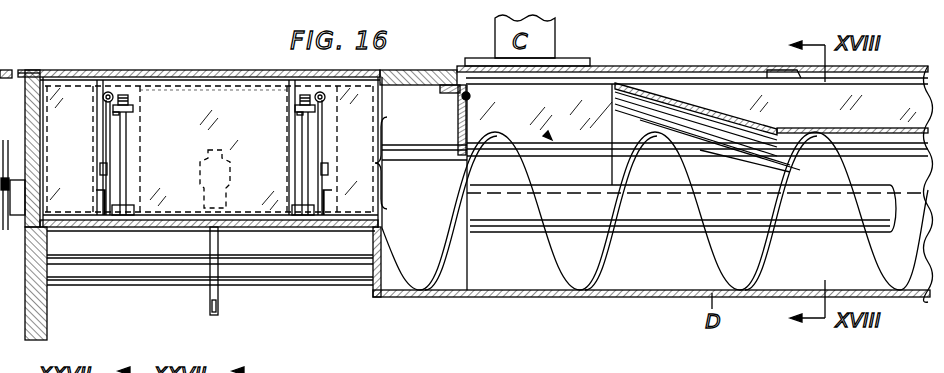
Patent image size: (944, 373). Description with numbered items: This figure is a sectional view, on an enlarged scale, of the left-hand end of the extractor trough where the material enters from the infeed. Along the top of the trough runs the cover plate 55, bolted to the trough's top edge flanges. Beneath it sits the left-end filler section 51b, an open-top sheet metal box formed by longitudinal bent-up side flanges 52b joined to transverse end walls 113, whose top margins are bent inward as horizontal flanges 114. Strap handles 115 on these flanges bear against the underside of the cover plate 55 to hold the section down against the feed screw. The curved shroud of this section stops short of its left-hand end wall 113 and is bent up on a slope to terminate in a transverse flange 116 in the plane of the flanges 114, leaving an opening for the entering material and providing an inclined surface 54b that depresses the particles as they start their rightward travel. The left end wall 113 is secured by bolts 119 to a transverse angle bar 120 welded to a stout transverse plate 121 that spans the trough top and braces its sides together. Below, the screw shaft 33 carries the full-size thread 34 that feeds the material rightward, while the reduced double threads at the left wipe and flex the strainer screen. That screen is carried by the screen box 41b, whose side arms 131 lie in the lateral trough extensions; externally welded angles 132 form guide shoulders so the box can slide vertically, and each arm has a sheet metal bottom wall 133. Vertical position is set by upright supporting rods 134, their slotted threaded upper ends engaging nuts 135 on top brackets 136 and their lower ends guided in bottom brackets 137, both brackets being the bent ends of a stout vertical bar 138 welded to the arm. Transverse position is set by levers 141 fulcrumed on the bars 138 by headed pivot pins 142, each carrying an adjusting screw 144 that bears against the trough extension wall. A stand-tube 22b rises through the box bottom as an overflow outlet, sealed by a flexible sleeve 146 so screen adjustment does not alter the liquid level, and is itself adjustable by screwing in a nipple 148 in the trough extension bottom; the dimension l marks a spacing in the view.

The stand-tube 22b is at (218, 304).
The screw shaft 33 is at (658, 213).
The screw thread 34 is at (720, 259).
The screen box 41b is at (401, 163).
The left-end filler section 51b is at (778, 123).
The side flange 52b is at (561, 162).
The inclined surface 54b is at (646, 82).
The cover plate 55 is at (78, 70).
The end wall 113 is at (459, 110).
The horizontal flange 114 is at (564, 85).
The strap handle 115 is at (787, 79).
The transverse flange 116 is at (603, 83).
The bolt 119 is at (470, 98).
The transverse angle bar 120 is at (456, 90).
The transverse plate 121 is at (437, 73).
The screen box arm 131 is at (214, 93).
The guide angle 132 is at (98, 186).
The bottom wall 133 is at (250, 228).
The supporting rod 134 is at (127, 164).
The nut 135 is at (134, 119).
The top bracket 136 is at (140, 105).
The bottom bracket 137 is at (146, 206).
The vertical bar 138 is at (110, 126).
The lever 141 is at (105, 108).
The pivot pin 142 is at (100, 165).
The adjusting screw 144 is at (108, 78).
The flexible sleeve 146 is at (216, 179).
The nipple 148 is at (208, 238).
The dimension l is at (550, 139).